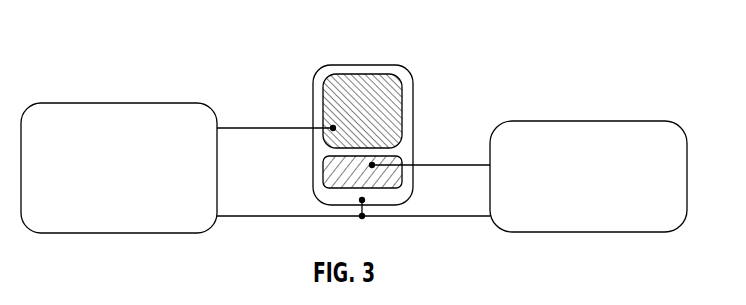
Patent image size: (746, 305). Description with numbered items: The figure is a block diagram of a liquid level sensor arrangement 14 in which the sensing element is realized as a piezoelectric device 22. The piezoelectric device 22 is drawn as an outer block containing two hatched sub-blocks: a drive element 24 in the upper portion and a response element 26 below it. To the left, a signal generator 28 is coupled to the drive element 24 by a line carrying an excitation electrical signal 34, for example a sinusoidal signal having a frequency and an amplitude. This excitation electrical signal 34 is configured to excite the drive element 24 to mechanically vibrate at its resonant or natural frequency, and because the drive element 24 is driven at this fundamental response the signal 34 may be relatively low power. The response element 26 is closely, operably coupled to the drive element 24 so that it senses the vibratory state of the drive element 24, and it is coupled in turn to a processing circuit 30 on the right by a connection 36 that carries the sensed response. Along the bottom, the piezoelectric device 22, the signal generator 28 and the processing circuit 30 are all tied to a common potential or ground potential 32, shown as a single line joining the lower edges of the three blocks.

The power distribution system 14 is at (496, 33).
The piezoelectric device 22 is at (336, 65).
The drive element 24 is at (323, 100).
The response element 26 is at (323, 173).
The signal generator 28 is at (52, 103).
The processing circuit 30 is at (656, 121).
The common potential or ground potential 32 is at (270, 216).
The excitation electrical signal 34 is at (270, 128).
The second conductor 36 is at (441, 165).